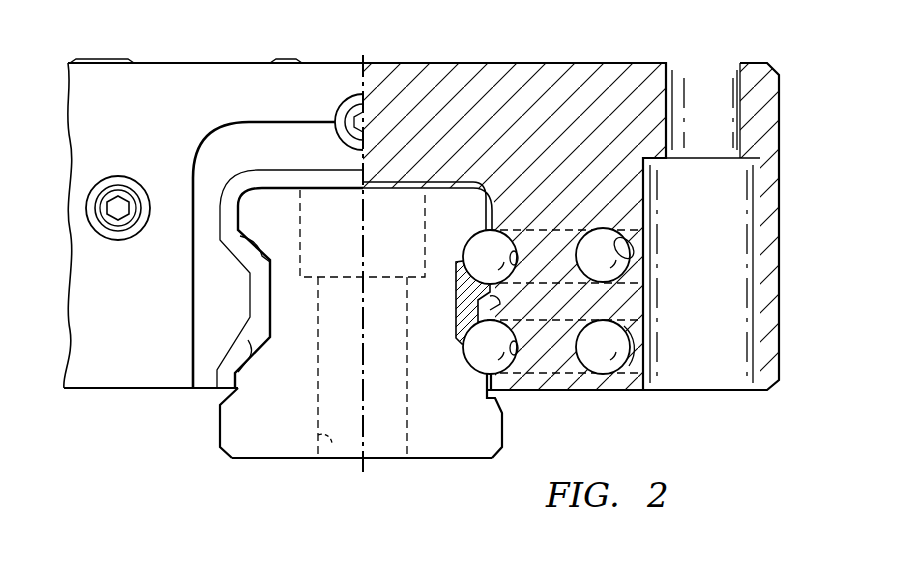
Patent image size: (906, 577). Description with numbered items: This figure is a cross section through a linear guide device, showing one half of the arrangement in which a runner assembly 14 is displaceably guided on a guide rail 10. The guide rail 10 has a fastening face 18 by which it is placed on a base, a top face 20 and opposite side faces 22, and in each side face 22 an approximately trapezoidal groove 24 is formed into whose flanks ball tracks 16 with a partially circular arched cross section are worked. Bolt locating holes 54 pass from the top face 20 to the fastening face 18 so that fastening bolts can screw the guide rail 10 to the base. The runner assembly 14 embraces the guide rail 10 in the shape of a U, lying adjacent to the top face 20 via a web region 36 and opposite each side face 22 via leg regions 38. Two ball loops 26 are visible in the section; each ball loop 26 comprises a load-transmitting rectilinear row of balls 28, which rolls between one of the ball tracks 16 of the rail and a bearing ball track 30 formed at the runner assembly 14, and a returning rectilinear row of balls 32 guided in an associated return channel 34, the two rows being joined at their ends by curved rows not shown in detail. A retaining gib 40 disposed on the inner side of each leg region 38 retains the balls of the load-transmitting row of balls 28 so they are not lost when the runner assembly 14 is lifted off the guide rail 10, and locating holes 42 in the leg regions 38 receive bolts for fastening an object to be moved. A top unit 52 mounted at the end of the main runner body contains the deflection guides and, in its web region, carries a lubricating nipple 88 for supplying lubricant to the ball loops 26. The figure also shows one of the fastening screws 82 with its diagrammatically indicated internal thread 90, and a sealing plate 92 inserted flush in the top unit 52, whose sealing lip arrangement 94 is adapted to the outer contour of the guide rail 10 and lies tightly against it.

The guide rail 10 is at (274, 446).
The runner assembly 14 is at (202, 62).
The ball tracks 16 is at (478, 240).
The fastening face 18 is at (446, 458).
The top face 20 is at (456, 182).
The side faces 22 is at (219, 423).
The trapezoidal groove 24 is at (272, 318).
The ball loops 26 is at (548, 224).
The load-transmitting row of balls 28 is at (464, 258).
The bearing ball track 30 is at (518, 252).
The returning row of balls 32 is at (634, 280).
The return channel 34 is at (642, 238).
The web region 36 is at (402, 62).
The leg regions 38 is at (72, 289).
The retaining gib 40 is at (460, 300).
The locating holes 42 is at (752, 375).
The top unit 52 is at (76, 338).
The bolt locating holes 54 is at (330, 446).
The fastening screw 82 is at (124, 196).
The lubricating nipple 88 is at (348, 118).
The internal thread 90 is at (124, 226).
The sealing plate 92 is at (200, 321).
The sealing lip arrangement 94 is at (252, 184).